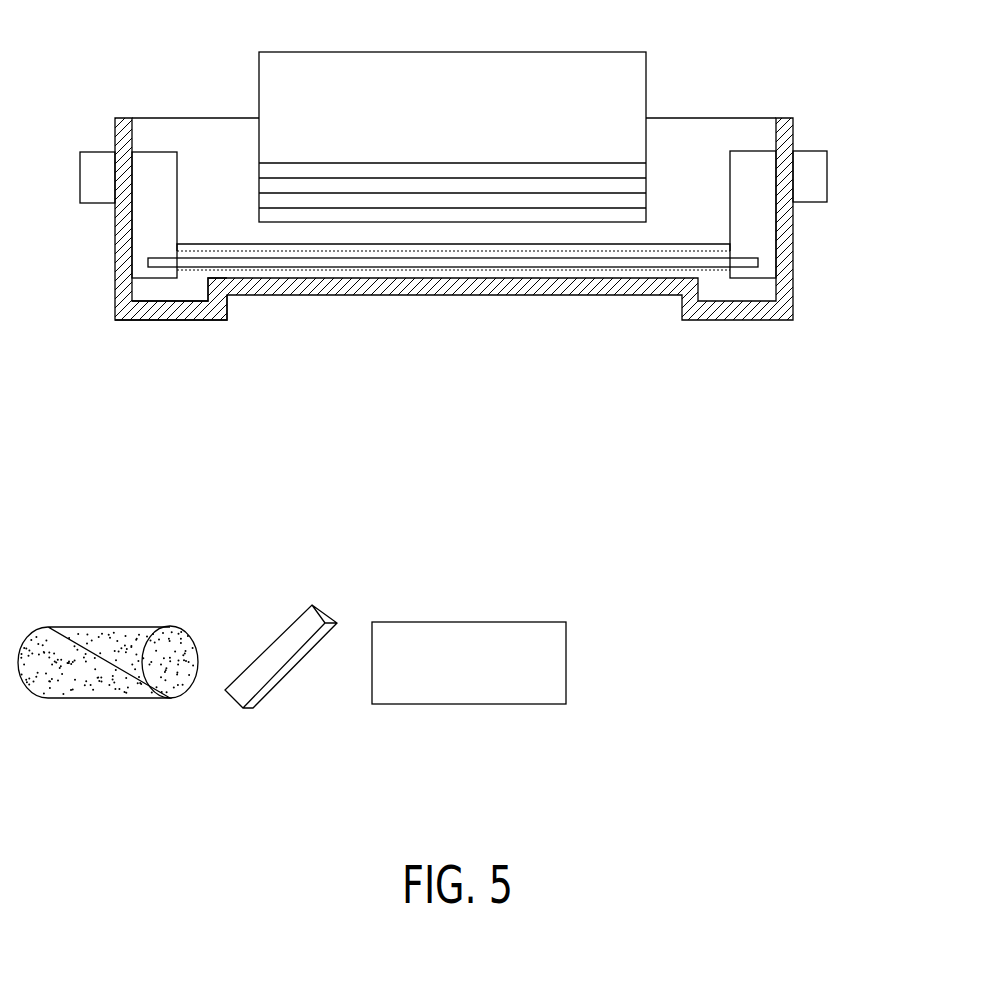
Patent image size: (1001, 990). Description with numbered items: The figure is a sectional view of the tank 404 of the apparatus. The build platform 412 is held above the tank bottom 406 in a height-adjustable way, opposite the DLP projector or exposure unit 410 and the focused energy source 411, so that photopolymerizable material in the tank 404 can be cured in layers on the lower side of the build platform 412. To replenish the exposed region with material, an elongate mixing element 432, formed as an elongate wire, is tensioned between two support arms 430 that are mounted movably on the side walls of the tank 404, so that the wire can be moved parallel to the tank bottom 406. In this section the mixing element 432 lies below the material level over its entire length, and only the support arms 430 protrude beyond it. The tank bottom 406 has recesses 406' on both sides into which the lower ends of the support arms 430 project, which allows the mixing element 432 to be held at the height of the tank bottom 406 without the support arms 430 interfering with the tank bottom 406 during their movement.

The tank 404 is at (485, 197).
The tank bottom 406 is at (457, 256).
The recesses 406' is at (184, 320).
The DLP projector 410 is at (573, 662).
The focused energy source 411 is at (138, 608).
The build platform 412 is at (322, 75).
The support arms 430 is at (753, 160).
The elongate mixing element 432 is at (703, 263).